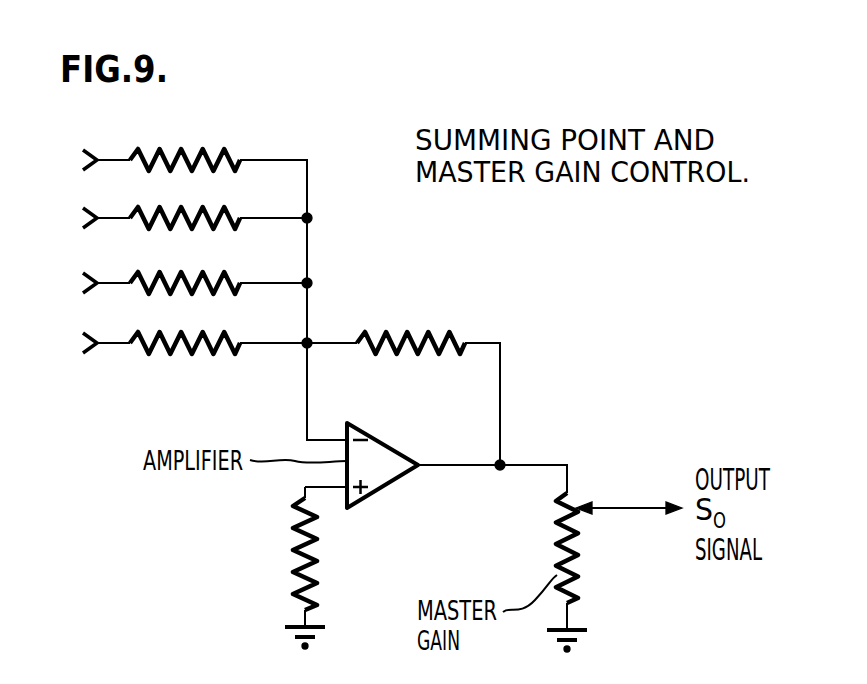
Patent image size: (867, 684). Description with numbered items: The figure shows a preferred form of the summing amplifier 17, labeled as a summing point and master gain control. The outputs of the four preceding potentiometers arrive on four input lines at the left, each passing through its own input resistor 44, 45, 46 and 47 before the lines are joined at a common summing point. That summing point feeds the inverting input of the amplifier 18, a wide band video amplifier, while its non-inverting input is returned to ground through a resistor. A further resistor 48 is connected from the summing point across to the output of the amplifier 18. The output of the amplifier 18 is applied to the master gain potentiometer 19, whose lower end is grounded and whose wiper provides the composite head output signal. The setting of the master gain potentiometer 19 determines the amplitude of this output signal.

The input resistor 44 is at (213, 152).
The input resistor 45 is at (213, 208).
The input resistor 46 is at (212, 277).
The input resistor 47 is at (212, 337).
The resistor 48 is at (457, 335).
The summing amplifier 17 is at (328, 440).
The amplifier 18 is at (390, 457).
The master gain potentiometer 19 is at (577, 576).